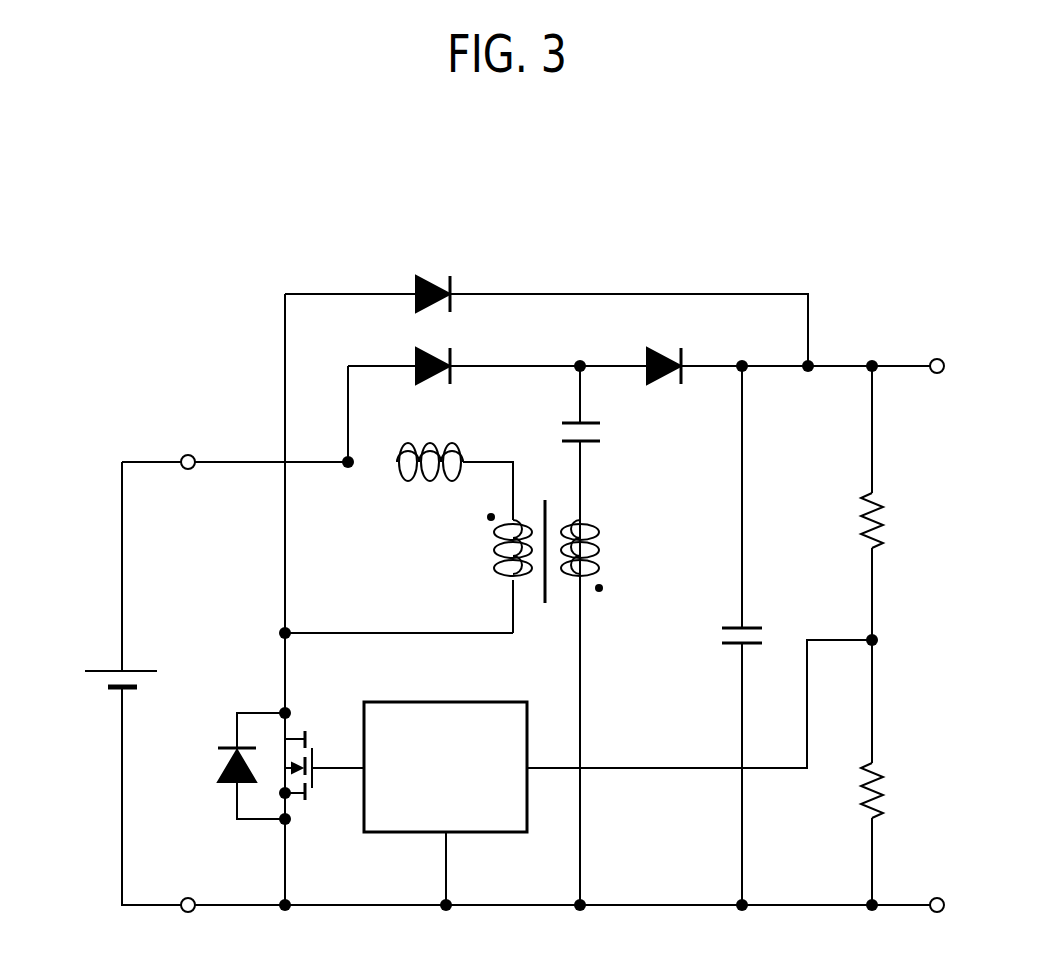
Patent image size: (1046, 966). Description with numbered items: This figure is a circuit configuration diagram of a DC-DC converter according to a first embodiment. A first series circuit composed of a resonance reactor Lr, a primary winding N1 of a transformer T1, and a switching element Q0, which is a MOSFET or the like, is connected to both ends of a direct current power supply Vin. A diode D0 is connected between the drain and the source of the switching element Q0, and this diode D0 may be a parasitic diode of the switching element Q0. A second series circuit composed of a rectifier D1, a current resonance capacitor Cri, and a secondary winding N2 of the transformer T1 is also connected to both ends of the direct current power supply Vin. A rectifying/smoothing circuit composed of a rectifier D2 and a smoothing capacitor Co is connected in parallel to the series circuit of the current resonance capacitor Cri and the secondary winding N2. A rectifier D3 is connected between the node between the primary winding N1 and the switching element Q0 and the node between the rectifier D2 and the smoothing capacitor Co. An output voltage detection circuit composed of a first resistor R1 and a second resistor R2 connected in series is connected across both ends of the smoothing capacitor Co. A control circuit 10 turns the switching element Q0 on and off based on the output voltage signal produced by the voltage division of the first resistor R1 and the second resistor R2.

The direct current power supply Vin is at (100, 677).
The rectifier D3 is at (453, 279).
The rectifier D1 is at (453, 354).
The rectifier D2 is at (683, 354).
The resonance reactor Lr is at (430, 441).
The current resonance capacitor Cri is at (603, 430).
The transformer T1 is at (547, 533).
The primary winding N1 is at (494, 544).
The secondary winding N2 is at (599, 556).
The smoothing capacitor Co is at (761, 640).
The first resistor R1 is at (893, 520).
The second resistor R2 is at (892, 790).
The diode D0 is at (236, 766).
The switching element Q0 is at (324, 780).
The control circuit 10 is at (440, 702).